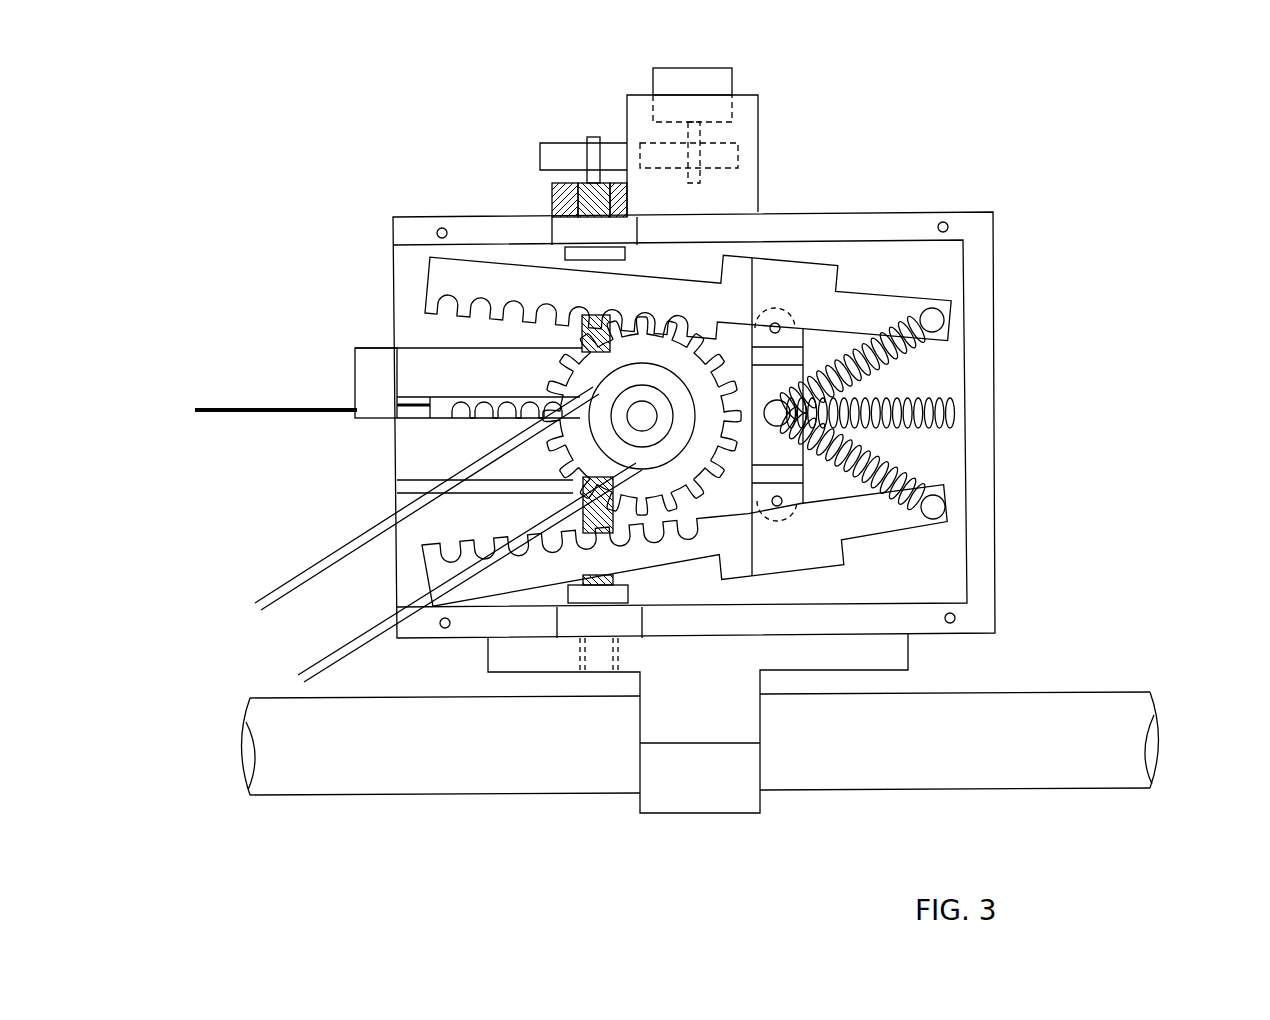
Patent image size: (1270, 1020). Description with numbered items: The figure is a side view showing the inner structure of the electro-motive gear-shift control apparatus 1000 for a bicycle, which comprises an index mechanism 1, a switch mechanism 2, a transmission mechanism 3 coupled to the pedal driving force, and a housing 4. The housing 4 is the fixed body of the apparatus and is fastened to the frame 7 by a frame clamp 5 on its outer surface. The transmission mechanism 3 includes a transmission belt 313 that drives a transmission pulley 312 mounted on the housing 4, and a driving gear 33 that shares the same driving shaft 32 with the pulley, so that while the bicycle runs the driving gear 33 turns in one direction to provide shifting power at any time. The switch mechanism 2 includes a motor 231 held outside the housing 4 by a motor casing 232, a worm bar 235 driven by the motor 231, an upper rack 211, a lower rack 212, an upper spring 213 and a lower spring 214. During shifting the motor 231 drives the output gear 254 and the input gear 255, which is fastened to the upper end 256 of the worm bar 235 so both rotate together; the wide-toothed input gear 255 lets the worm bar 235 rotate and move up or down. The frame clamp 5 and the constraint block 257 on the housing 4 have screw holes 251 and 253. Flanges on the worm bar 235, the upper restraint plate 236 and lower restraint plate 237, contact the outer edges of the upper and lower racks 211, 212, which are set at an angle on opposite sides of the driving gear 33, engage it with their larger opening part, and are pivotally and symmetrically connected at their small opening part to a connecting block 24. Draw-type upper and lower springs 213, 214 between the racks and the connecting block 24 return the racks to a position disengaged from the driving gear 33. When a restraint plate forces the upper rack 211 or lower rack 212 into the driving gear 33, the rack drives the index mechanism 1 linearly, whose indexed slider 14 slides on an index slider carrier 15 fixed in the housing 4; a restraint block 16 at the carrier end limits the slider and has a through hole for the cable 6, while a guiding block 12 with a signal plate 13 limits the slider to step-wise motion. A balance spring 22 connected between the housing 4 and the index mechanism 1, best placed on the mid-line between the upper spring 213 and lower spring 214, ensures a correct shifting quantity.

The index mechanism 1 is at (277, 368).
The switch mechanism 2 is at (930, 262).
The transmission mechanism 3 is at (302, 648).
The housing 4 is at (920, 228).
The frame clamp 5 is at (743, 800).
The cable 6 is at (230, 413).
The frame 7 is at (1033, 765).
The guiding block 12 is at (398, 487).
The signal plate 13 is at (407, 460).
The indexed slider 14 is at (445, 407).
The index slider carrier 15 is at (428, 358).
The restraint block 16 is at (365, 370).
The balance spring 22 is at (960, 410).
The connecting block 24 is at (780, 375).
The driving shaft 32 is at (645, 420).
The driving gear 33 is at (683, 355).
The upper rack 211 is at (893, 305).
The lower rack 212 is at (865, 525).
The upper spring 213 is at (907, 355).
The lower spring 214 is at (903, 470).
The motor 231 is at (730, 80).
The motor casing 232 is at (758, 117).
The worm bar 235 is at (582, 183).
The upper restraint plate 236 is at (565, 255).
The lower restraint plate 237 is at (568, 600).
The screw hole 251 is at (577, 673).
The screw hole 253 is at (550, 193).
The output gear 254 is at (748, 152).
The input gear 255 is at (547, 142).
The upper end of the worm bar 256 is at (593, 137).
The constraint block 257 is at (552, 203).
The transmission pulley 312 is at (575, 476).
The transmission belt 313 is at (277, 587).
The electro-motive gear-shift control apparatus 1000 is at (1092, 492).